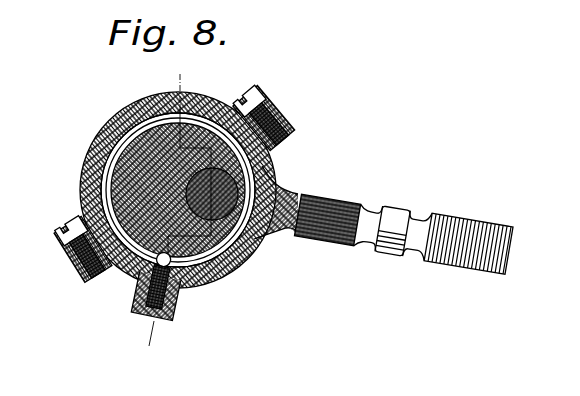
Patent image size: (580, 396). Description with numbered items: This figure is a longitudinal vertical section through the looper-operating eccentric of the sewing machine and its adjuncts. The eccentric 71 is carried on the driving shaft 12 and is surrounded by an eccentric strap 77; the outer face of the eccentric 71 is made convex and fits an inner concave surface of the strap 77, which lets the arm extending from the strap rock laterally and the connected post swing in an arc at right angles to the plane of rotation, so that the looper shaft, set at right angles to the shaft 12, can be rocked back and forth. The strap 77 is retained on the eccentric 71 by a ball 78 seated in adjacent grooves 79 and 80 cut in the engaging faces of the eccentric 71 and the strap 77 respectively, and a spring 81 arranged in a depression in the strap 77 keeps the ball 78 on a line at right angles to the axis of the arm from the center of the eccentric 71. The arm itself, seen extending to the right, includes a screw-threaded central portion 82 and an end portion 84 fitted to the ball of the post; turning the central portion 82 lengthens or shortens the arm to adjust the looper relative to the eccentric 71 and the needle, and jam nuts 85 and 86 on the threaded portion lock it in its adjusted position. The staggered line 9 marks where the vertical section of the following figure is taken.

The section line 9 is at (176, 210).
The driving shaft 12 is at (265, 157).
The eccentric 71 is at (113, 160).
The eccentric strap 77 is at (95, 118).
The ball 78 is at (161, 257).
The groove 79 is at (227, 233).
The groove 80 is at (232, 217).
The spring 81 is at (167, 308).
The central portion 82 is at (390, 208).
The end portion 84 is at (470, 263).
The jam nut 85 is at (333, 193).
The jam nut 86 is at (440, 210).